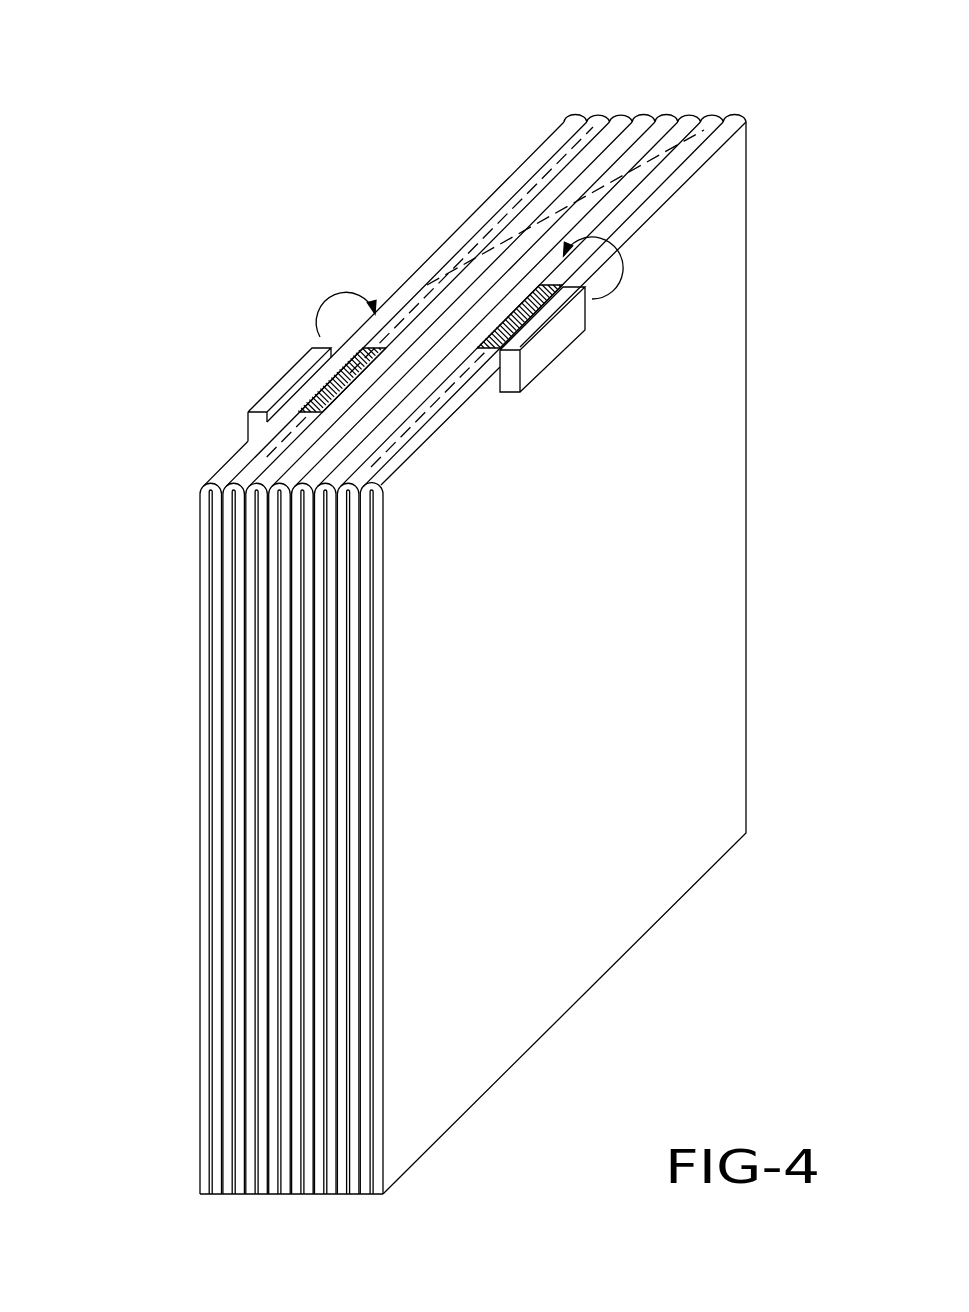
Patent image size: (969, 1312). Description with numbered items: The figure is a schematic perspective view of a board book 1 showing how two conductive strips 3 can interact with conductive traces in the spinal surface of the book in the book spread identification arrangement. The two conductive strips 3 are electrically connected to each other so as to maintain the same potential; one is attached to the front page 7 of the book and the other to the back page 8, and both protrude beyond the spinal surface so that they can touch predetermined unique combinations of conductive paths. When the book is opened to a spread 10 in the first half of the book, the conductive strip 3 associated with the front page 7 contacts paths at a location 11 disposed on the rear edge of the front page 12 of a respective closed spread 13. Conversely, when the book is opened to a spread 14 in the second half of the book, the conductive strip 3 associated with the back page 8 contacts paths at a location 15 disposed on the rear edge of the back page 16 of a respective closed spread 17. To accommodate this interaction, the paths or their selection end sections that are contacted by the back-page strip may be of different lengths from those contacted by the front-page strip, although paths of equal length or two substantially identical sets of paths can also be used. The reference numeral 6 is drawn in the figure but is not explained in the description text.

The board book 1 is at (156, 962).
The conductive strip 3 is at (276, 392).
The folded edge of electrode stack 6 is at (634, 128).
The front page 7 is at (705, 825).
The back page 8 is at (200, 1128).
The spread 10 is at (378, 1012).
The location 11 is at (512, 313).
The front page of closed spread 12 is at (352, 733).
The closed spread 13 is at (347, 690).
The spread 14 is at (210, 583).
The location 15 is at (365, 377).
The back page of closed spread 16 is at (230, 636).
The closed spread 17 is at (240, 676).